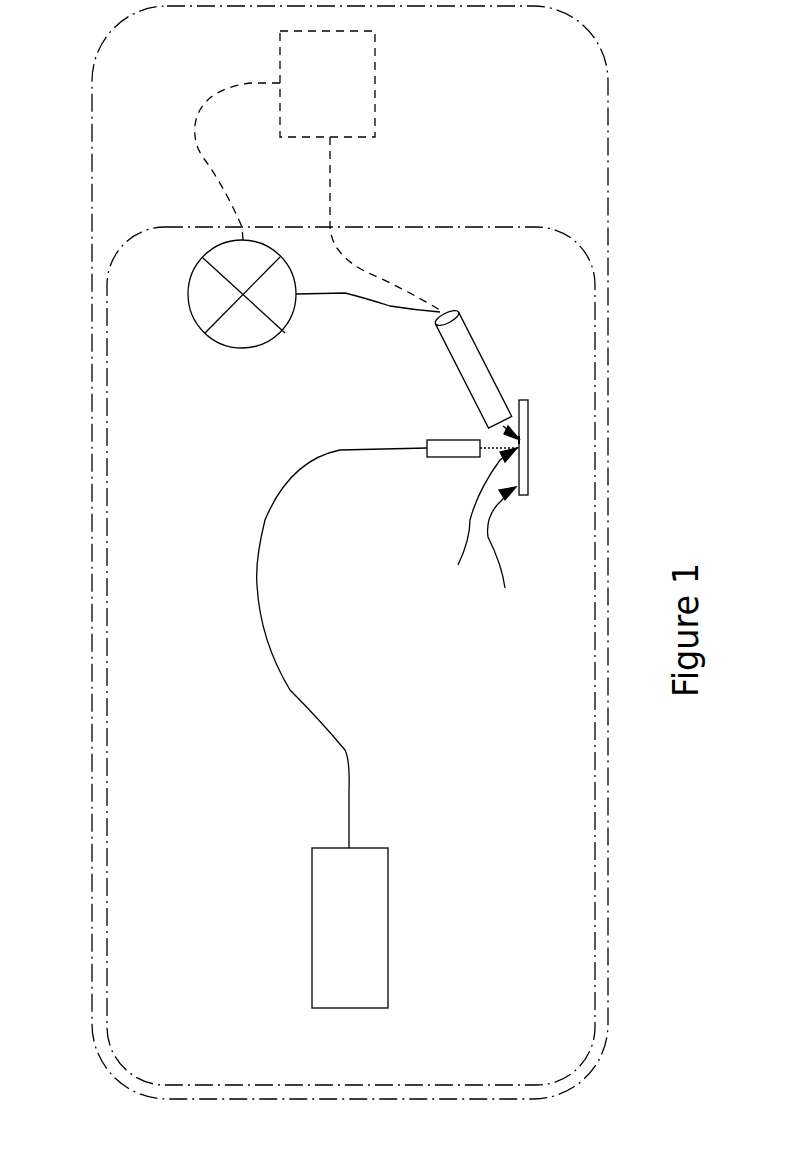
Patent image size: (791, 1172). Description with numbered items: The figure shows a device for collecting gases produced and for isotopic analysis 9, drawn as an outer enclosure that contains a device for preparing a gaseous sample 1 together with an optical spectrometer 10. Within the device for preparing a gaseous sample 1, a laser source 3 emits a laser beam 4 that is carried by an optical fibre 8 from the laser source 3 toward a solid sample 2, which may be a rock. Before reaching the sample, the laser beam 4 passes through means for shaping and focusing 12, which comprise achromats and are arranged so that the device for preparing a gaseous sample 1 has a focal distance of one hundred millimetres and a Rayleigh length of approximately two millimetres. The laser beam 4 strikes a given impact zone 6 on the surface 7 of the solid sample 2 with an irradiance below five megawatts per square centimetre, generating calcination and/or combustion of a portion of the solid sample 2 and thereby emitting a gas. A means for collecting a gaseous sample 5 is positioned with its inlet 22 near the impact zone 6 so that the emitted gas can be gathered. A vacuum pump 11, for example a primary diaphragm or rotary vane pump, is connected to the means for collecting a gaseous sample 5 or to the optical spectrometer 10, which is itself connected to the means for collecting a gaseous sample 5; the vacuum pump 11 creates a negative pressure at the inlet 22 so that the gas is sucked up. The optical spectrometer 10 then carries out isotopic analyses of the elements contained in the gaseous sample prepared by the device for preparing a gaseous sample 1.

The device for preparing a gaseous sample 1 is at (507, 228).
The solid sample 2 is at (528, 457).
The laser source 3 is at (323, 960).
The laser beam 4 is at (488, 450).
The means for collecting a gaseous sample 5 is at (472, 358).
The impact zone 6 is at (480, 516).
The surface 7 is at (502, 549).
The optical fibre 8 is at (256, 587).
The device for collecting gases produced and for isotopic analysis 9 is at (608, 164).
The optical spectrometer 10 is at (362, 69).
The vacuum pump 11 is at (205, 299).
The means for shaping and focusing 12 is at (437, 438).
The inlet 22 is at (528, 440).